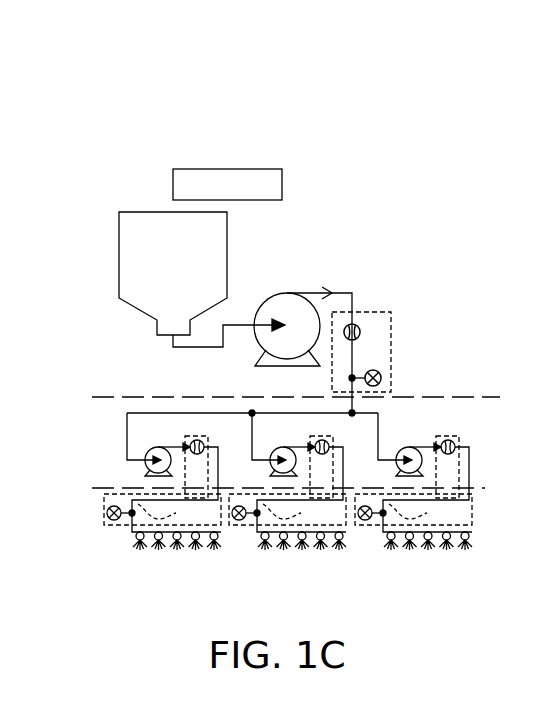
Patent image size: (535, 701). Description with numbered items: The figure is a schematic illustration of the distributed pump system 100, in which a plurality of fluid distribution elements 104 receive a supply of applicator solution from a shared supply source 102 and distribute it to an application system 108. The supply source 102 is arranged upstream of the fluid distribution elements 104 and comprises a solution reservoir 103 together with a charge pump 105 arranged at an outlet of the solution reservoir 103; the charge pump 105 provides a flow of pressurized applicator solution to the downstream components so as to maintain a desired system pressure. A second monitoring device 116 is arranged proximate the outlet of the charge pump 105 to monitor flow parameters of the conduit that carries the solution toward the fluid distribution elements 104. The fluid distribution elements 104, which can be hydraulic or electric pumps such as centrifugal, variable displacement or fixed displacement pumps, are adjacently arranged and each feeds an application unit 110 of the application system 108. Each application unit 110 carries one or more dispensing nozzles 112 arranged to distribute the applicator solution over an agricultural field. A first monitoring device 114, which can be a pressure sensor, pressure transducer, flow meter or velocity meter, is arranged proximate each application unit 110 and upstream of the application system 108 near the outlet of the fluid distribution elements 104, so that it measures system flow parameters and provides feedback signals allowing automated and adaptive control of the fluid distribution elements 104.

The distributed pump system 100 is at (301, 78).
The supply source 102 is at (299, 202).
The solution reservoir 103 is at (193, 268).
The fluid distribution element 104 is at (150, 453).
The charge pump 105 is at (264, 298).
The application system 108 is at (103, 514).
The application unit 110 is at (131, 528).
The dispensing nozzle 112 is at (181, 559).
The first monitoring device 114 is at (288, 513).
The second monitoring device 116 is at (392, 343).